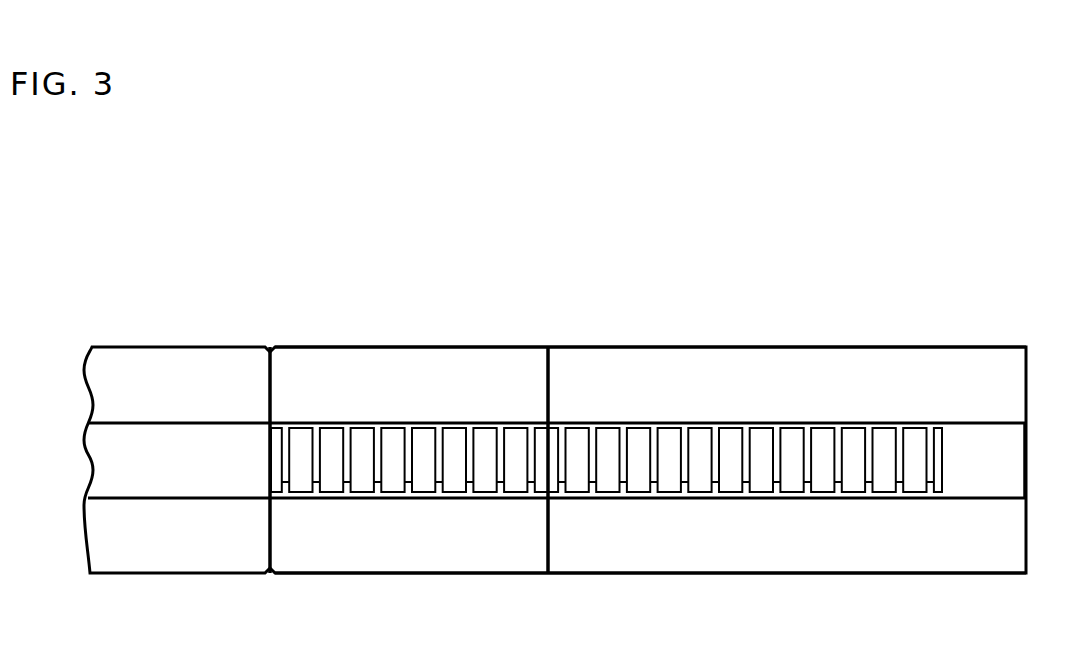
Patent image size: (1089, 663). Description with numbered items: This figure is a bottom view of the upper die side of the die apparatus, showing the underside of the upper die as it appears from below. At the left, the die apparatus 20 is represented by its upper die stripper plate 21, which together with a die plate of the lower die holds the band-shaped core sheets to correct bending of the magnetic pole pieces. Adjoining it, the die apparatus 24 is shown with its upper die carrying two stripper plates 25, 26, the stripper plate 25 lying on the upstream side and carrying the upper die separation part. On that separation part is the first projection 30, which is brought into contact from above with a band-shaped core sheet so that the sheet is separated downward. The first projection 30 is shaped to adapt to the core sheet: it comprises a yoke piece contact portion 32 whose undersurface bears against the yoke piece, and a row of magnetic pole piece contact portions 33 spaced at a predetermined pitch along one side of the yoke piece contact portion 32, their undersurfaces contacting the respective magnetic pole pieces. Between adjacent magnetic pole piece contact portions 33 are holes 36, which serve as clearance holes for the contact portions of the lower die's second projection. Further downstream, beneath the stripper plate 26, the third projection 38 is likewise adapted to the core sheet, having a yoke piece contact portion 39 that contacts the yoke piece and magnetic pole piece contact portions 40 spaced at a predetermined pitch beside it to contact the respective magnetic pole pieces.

The die apparatus 20 is at (159, 274).
The stripper plate 21 is at (199, 347).
The die apparatus 24 is at (629, 265).
The stripper plate 25 is at (463, 362).
The stripper plate 26 is at (770, 365).
The first projection 30 is at (498, 414).
The yoke piece contact portion 32 is at (396, 425).
The magnetic pole piece contact portions 33 is at (408, 484).
The holes 36 is at (365, 438).
The third projection 38 is at (879, 414).
The yoke piece contact portion 39 is at (670, 422).
The magnetic pole piece contact portions 40 is at (717, 484).